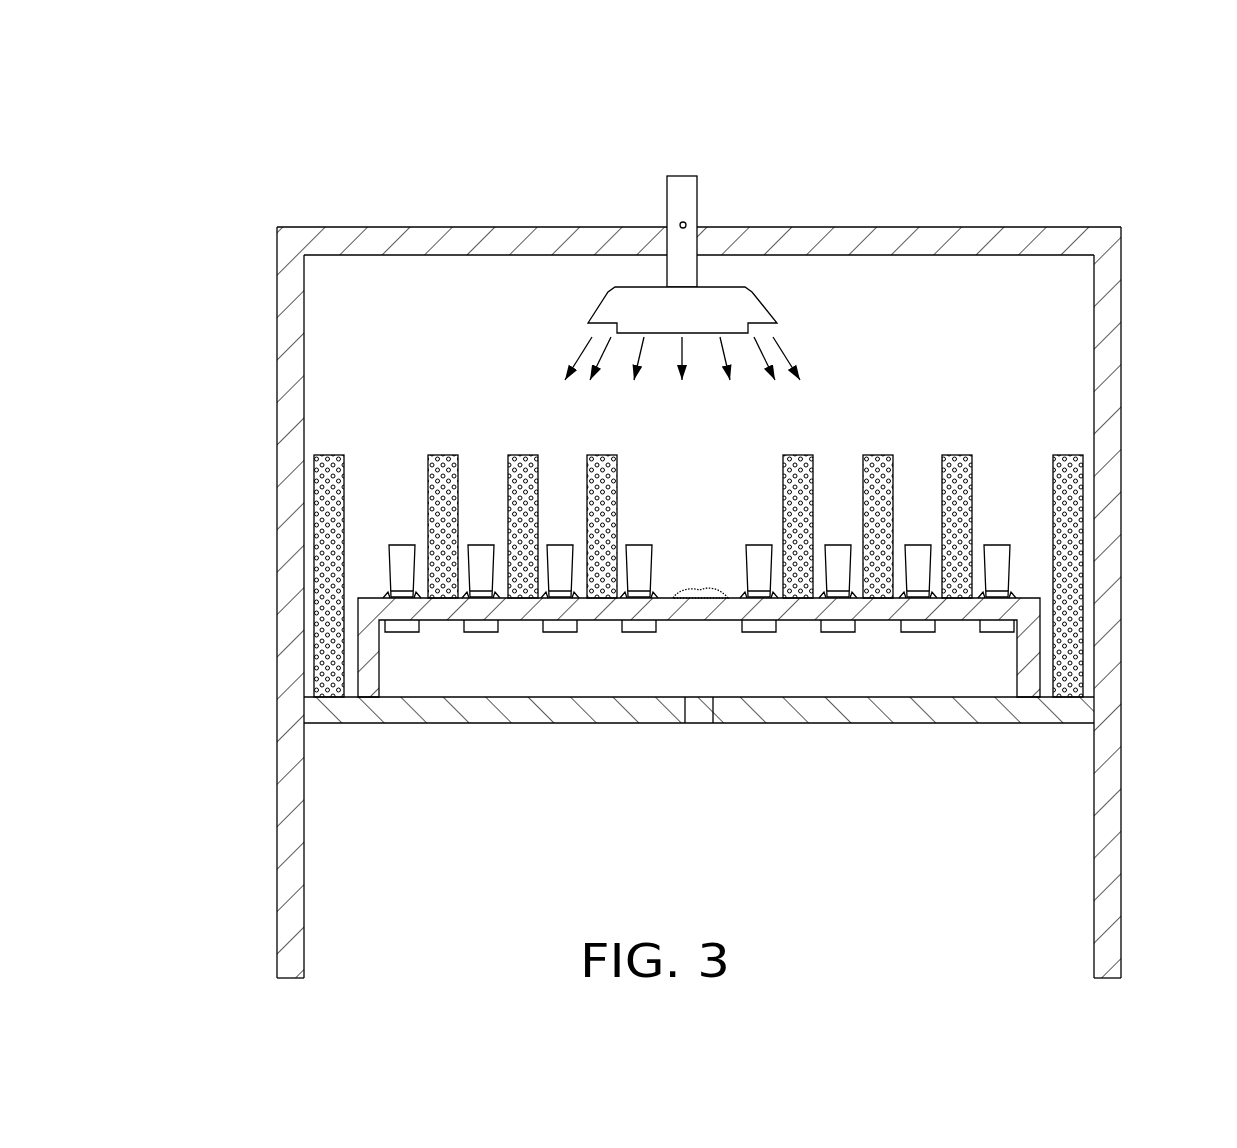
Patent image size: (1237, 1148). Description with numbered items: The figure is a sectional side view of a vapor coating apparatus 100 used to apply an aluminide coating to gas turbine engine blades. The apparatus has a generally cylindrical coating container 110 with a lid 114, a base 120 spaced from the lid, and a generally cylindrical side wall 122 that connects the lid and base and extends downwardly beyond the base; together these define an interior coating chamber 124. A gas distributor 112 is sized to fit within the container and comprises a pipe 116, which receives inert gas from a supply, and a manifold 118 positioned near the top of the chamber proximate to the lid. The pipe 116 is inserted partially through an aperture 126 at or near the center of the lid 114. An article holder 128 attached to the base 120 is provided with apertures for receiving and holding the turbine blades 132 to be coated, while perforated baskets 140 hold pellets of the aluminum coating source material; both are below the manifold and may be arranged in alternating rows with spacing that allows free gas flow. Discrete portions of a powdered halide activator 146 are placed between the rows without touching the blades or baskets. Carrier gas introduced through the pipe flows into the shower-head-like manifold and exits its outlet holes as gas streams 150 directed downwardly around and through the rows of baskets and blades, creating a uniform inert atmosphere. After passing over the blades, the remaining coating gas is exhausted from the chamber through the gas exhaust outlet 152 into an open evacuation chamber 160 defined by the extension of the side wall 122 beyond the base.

The vapor coating apparatus 100 is at (698, 558).
The coating container 110 is at (691, 565).
The gas distributor 112 is at (679, 215).
The lid 114 is at (836, 226).
The pipe 116 is at (676, 203).
The manifold 118 is at (776, 290).
The base 120 is at (537, 724).
The side wall 122 is at (278, 498).
The interior coating chamber 124 is at (926, 318).
The aperture 126 is at (688, 228).
The article holder 128 is at (675, 622).
The turbine blades 132 is at (405, 545).
The perforated baskets 140 is at (441, 455).
The powdered halide activator 146 is at (680, 592).
The gas streams 150 is at (610, 342).
The gas exhaust outlet 152 is at (705, 724).
The evacuation chamber 160 is at (1068, 843).